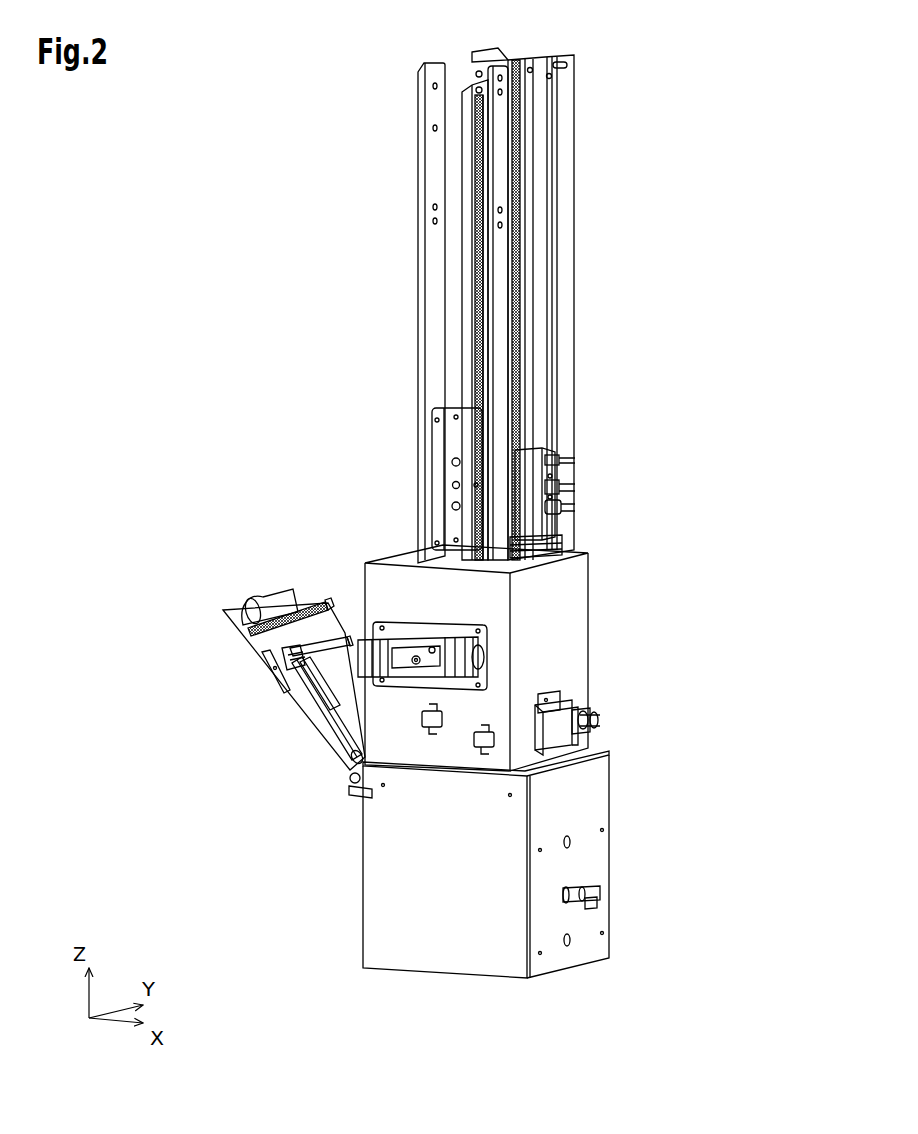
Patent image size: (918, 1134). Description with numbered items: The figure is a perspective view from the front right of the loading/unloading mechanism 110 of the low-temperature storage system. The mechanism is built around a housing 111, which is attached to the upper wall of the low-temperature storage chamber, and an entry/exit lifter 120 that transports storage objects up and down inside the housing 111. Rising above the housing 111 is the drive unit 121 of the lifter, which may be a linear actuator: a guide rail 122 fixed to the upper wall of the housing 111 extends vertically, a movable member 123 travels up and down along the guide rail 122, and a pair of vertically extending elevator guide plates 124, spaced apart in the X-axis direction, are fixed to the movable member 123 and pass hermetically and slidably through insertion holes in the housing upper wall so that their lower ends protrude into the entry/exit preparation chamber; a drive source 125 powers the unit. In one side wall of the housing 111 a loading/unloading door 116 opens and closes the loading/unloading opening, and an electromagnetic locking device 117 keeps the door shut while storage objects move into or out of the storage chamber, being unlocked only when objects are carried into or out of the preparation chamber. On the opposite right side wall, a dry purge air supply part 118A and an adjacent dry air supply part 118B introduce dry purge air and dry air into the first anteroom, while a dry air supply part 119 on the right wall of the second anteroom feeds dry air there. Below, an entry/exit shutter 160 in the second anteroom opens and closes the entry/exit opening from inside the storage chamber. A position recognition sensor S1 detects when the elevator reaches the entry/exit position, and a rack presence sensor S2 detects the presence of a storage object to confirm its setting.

The loading/unloading mechanism 110 is at (162, 327).
The housing 111 is at (373, 573).
The loading/unloading door 116 is at (281, 701).
The electromagnetic locking device 117 is at (494, 650).
The dry purge air supply part 118A is at (602, 720).
The dry air supply part 118B is at (589, 706).
The dry air supply part 119 is at (605, 891).
The entry/exit lifter 120 is at (413, 402).
The drive unit 121 is at (762, 132).
The guide rail 122 is at (522, 326).
The movable member 123 is at (478, 431).
The elevator guide plates 124 is at (437, 161).
The drive source 125 is at (556, 474).
The entry/exit shutter 160 is at (393, 970).
The position recognition sensor S1 is at (496, 756).
The rack presence sensor S2 is at (431, 740).